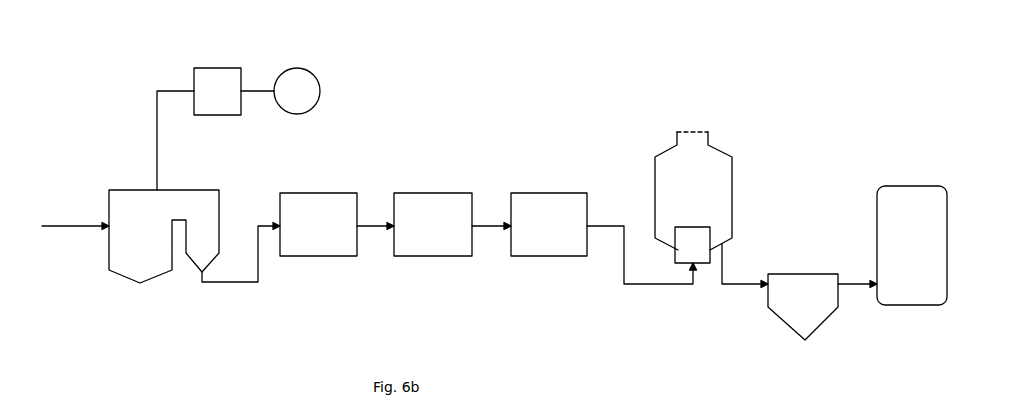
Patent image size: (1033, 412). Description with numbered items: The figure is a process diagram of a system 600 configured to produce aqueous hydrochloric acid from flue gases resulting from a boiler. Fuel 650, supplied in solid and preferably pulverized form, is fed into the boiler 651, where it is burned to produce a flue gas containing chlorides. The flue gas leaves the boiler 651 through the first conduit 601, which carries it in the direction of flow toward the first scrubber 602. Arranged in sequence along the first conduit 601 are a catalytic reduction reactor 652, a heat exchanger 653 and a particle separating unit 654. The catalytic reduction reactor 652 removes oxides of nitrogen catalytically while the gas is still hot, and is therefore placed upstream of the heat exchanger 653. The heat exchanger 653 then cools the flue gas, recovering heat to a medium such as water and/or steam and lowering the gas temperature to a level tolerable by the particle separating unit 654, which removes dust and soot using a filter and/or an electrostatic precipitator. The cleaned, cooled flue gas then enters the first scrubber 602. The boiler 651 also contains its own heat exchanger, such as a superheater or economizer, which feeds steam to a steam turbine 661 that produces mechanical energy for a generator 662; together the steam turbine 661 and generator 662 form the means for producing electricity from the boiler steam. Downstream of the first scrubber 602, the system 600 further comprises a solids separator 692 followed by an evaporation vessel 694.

The system 600 is at (128, 61).
The first conduit 601 is at (232, 284).
The first scrubber 602 is at (735, 192).
The fuel 650 is at (72, 218).
The boiler 651 is at (130, 188).
The catalytic reduction reactor 652 is at (322, 190).
The heat exchanger 653 is at (440, 190).
The particle separating unit 654 is at (553, 190).
The steam turbine 661 is at (213, 67).
The generator 662 is at (297, 68).
The solids separator 692 is at (810, 273).
The evaporation vessel 694 is at (910, 184).